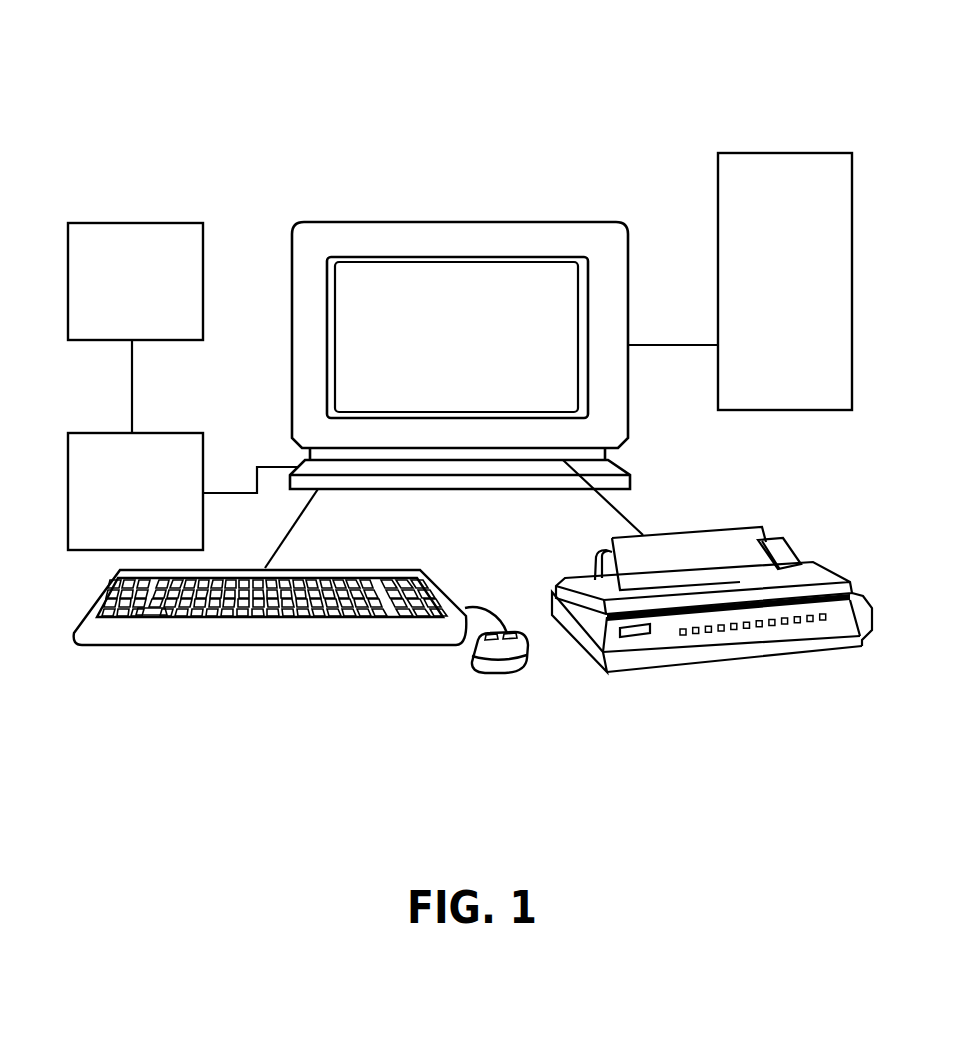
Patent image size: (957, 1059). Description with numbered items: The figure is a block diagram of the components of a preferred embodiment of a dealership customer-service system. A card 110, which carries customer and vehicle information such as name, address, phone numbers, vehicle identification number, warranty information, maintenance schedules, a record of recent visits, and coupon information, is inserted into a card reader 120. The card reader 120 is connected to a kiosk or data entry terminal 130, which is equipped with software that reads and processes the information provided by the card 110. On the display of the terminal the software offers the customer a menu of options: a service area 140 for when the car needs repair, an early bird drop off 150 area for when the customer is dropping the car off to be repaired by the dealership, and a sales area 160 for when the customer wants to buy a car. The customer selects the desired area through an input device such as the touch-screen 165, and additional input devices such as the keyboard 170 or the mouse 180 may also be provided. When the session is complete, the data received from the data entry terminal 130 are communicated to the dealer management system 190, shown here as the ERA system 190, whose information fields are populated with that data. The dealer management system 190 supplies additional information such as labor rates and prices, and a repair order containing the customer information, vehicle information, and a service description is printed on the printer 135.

The card 110 is at (135, 281).
The card reader 120 is at (135, 491).
The kiosk or data entry terminal 130 is at (500, 222).
The printer 135 is at (732, 658).
The service area 140 is at (428, 311).
The early bird drop off area 150 is at (458, 341).
The sales area 160 is at (446, 373).
The touch-screen 165 is at (378, 279).
The keyboard 170 is at (180, 645).
The mouse 180 is at (503, 673).
The dealer management system (ERA system) 190 is at (785, 281).